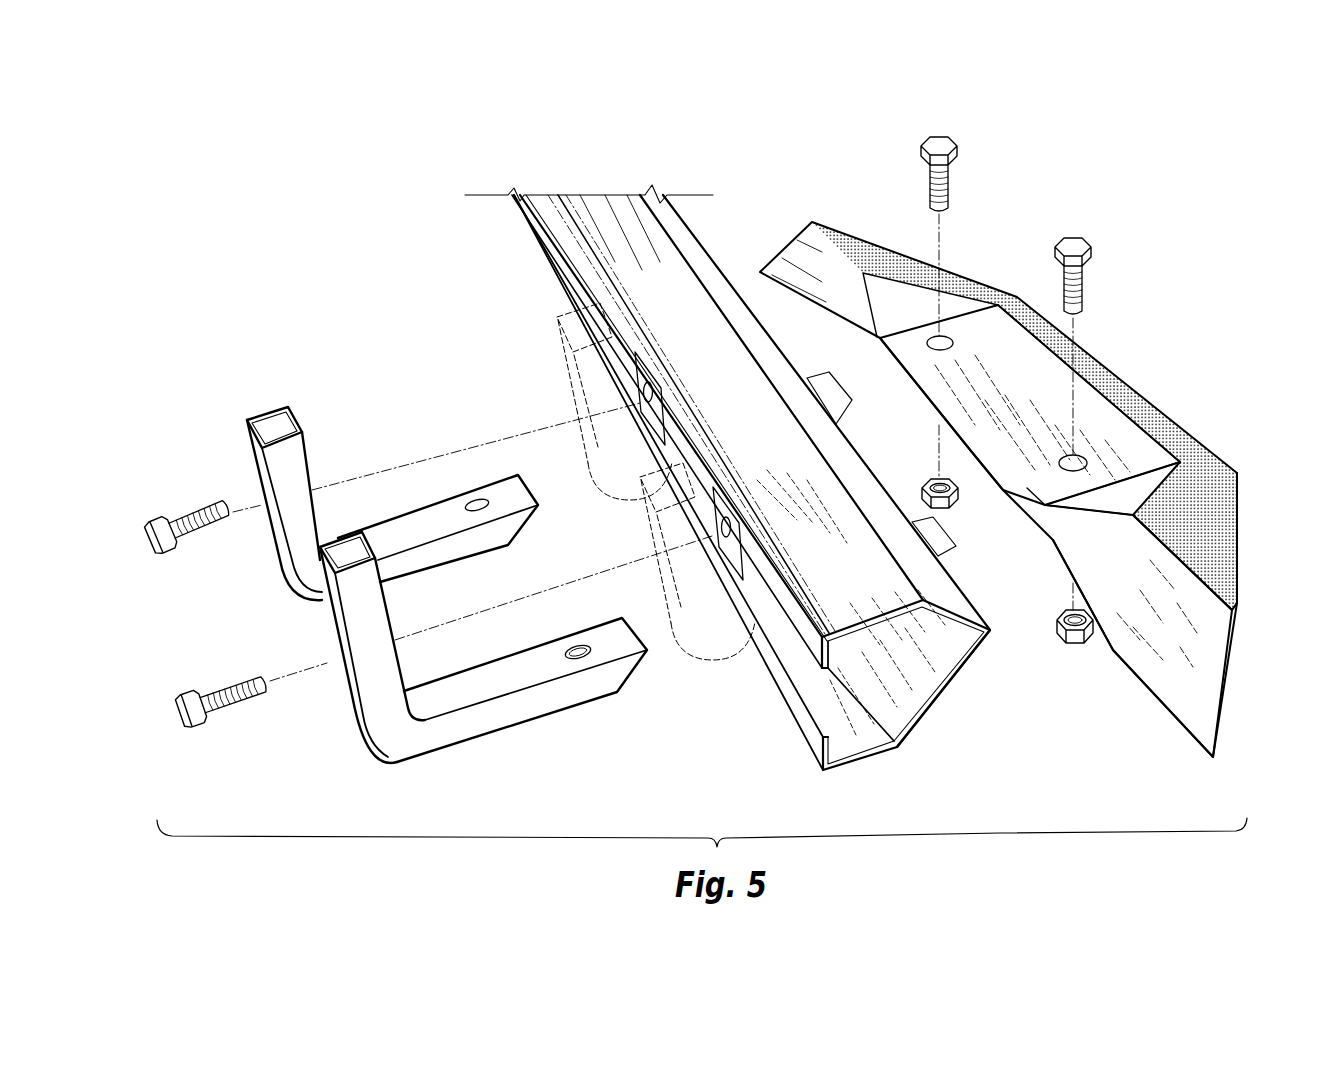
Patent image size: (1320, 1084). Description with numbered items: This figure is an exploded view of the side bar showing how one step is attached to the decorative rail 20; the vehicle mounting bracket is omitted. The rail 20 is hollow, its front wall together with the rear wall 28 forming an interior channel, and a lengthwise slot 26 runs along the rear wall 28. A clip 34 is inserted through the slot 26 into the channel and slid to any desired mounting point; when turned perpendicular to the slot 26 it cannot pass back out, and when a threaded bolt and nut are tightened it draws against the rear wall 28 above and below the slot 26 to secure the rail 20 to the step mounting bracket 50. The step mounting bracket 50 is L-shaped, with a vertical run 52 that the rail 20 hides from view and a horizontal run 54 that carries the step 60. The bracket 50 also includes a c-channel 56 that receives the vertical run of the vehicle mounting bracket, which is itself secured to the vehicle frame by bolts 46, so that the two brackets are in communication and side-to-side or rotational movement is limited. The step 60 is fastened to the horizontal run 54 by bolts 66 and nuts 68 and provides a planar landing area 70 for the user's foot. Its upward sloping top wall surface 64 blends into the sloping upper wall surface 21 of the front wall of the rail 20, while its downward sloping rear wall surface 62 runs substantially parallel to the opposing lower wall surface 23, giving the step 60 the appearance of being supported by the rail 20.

The decorative rail 20 is at (728, 450).
The sloping upper wall surface 21 is at (843, 448).
The lower wall surface 23 is at (952, 683).
The slot 26 is at (783, 630).
The rear wall 28 is at (808, 638).
The clip 34 is at (753, 578).
The bolt 46 is at (155, 520).
The step mounting bracket 50 is at (441, 667).
The vertical run 52 is at (355, 488).
The horizontal run 54 is at (507, 718).
The c-channel 56 is at (265, 435).
The step 60 is at (1006, 483).
The downward sloping rear wall surface 62 is at (1140, 645).
The upward sloping top wall surface 64 is at (1200, 472).
The bolt 66 is at (1087, 243).
The nut 68 is at (1057, 614).
The planar landing area 70 is at (1003, 343).